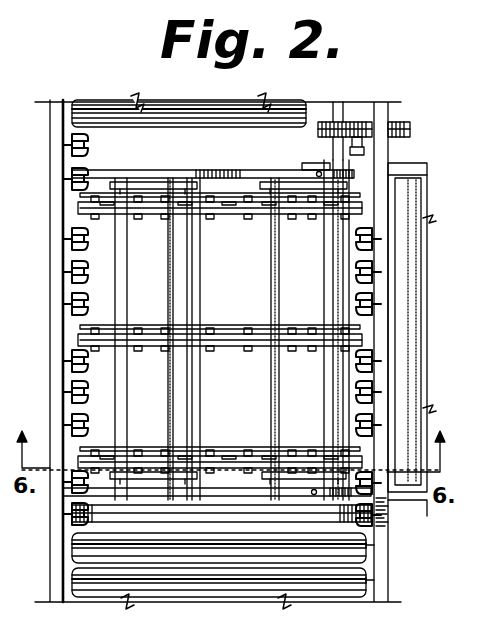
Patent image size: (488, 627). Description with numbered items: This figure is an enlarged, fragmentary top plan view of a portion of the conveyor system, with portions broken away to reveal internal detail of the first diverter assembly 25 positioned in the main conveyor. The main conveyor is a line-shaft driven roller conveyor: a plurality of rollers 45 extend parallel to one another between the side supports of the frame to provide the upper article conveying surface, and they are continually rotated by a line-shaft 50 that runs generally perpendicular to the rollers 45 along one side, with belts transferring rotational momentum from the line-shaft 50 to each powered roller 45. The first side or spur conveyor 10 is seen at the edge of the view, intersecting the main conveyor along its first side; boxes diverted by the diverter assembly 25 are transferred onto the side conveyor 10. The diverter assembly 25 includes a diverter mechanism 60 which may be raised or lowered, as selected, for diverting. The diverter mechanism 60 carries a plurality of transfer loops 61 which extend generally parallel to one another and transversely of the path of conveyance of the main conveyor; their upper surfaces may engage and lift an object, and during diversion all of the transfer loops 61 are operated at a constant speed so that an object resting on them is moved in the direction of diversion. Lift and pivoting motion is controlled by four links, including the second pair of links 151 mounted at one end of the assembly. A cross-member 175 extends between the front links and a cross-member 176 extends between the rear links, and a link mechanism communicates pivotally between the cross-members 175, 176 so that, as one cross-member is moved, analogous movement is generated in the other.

The first side conveyor 10 is at (427, 156).
The first diverter assembly 25 is at (122, 407).
The rollers 45 is at (73, 255).
The line-shaft 50 is at (341, 118).
The diverter mechanism 60 is at (153, 324).
The transfer loops 61 is at (230, 208).
The second pair of links 151 is at (163, 182).
The cross-member 175 is at (327, 378).
The cross-member 176 is at (193, 398).